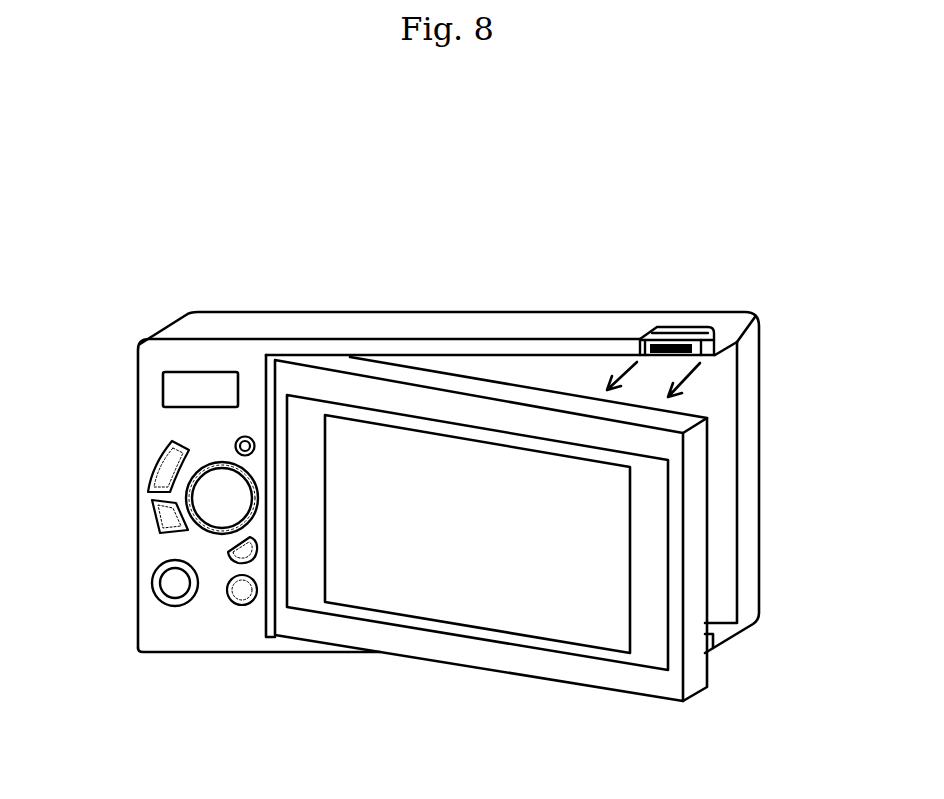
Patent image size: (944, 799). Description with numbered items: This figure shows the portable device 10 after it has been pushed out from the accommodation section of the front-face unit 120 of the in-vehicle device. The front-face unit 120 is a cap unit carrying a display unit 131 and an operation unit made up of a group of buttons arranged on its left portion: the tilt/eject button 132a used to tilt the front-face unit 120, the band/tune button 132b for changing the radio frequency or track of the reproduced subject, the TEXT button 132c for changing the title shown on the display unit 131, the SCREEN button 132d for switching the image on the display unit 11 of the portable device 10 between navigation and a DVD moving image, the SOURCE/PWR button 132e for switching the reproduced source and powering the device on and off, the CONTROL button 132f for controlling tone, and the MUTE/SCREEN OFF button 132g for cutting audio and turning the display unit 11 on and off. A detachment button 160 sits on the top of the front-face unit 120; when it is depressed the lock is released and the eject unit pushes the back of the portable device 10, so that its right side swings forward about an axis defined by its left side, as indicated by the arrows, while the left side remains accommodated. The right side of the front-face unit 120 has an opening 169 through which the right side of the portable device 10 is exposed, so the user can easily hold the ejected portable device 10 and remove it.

The front-face unit 120 is at (193, 329).
The display unit 131 is at (178, 390).
The tilt/eject button 132a is at (243, 591).
The band/tune button 132b is at (168, 585).
The TEXT button 132c is at (252, 550).
The SCREEN button 132d is at (235, 502).
The SOURCE/PWR button 132e is at (163, 473).
The CONTROL button 132f is at (163, 515).
The MUTE/SCREEN OFF button 132g is at (255, 446).
The detachment button 160 is at (680, 341).
The opening 169 is at (718, 405).
The portable device 10 is at (650, 657).
The display unit 11 is at (495, 600).